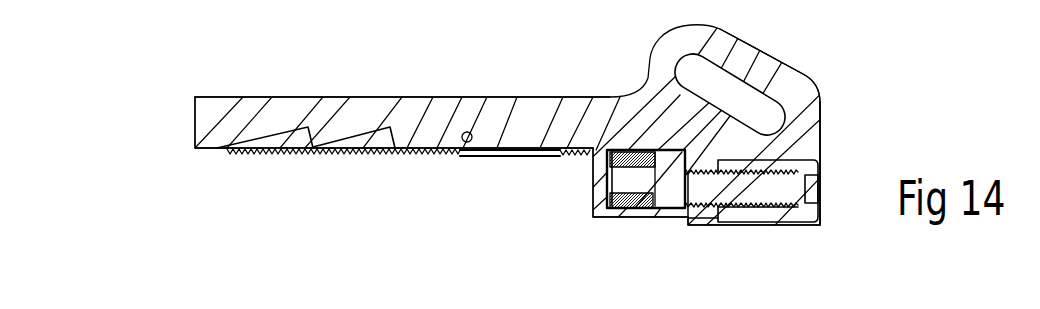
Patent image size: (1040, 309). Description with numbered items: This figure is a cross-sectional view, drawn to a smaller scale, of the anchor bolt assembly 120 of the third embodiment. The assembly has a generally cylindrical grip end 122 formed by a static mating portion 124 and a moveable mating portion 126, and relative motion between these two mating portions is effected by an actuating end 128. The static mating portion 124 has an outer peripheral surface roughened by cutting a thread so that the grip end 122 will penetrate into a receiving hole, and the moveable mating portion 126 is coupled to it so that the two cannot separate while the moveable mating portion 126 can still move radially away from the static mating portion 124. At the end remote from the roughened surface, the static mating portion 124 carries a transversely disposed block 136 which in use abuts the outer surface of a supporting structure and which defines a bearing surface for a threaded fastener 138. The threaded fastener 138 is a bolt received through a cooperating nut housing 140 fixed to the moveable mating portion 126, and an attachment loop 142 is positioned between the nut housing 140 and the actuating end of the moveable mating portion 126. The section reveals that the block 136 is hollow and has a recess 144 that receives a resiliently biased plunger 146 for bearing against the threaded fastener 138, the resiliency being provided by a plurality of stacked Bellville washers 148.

The anchor bolt assembly 120 is at (243, 52).
The grip end 122 is at (227, 200).
The static mating portion 124 is at (297, 145).
The moveable mating portion 126 is at (468, 98).
The actuating end 128 is at (791, 169).
The transversely disposed block 136 is at (592, 193).
The threaded fastener 138 is at (782, 161).
The nut housing 140 is at (707, 222).
The attachment loop 142 is at (745, 60).
The recess 144 is at (608, 176).
The resiliently biased plunger 146 is at (667, 205).
The stacked Bellville washers 148 is at (623, 208).